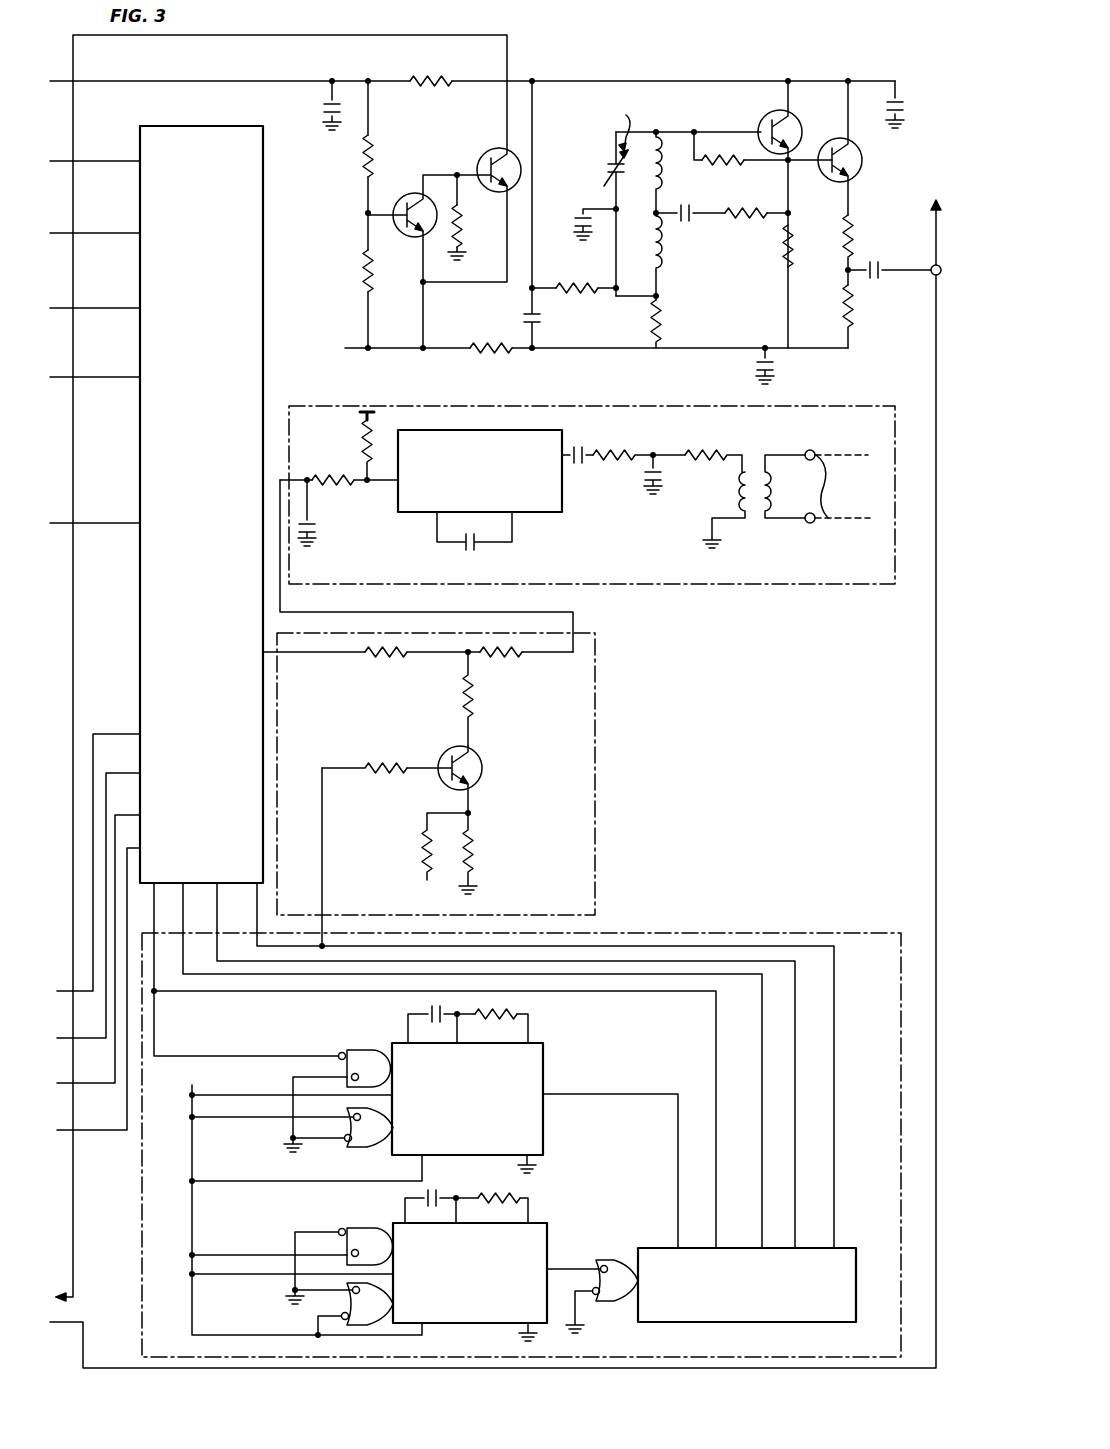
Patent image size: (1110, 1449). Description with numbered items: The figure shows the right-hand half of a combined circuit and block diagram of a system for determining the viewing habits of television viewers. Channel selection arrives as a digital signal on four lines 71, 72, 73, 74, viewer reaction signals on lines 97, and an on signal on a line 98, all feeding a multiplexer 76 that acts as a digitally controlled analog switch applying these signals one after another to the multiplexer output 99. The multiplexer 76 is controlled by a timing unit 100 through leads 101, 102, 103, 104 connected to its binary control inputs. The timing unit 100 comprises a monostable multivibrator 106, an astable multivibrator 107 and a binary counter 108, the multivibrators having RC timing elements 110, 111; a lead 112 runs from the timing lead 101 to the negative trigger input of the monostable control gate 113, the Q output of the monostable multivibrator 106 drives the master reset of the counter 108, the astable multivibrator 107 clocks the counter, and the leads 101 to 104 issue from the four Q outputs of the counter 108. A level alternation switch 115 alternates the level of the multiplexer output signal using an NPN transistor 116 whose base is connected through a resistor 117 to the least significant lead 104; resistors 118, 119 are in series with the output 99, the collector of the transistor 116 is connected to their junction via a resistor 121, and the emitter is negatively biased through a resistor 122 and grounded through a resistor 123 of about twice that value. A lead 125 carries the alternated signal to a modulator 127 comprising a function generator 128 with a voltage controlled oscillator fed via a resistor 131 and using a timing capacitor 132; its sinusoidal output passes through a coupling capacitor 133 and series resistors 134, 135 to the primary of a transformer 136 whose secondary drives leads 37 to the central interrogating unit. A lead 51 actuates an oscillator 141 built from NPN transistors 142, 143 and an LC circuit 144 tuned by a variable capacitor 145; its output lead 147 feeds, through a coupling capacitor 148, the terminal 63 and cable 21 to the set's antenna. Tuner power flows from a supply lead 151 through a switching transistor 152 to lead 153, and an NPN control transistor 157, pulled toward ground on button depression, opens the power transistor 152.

The cable 21 is at (930, 238).
The leads 37 is at (829, 486).
The lead 51 is at (62, 80).
The terminal 63 is at (940, 268).
The line 71 is at (120, 732).
The line 72 is at (126, 772).
The line 73 is at (133, 814).
The line 74 is at (136, 842).
The multiplexer 76 is at (263, 218).
The lines 97 is at (64, 160).
The line 98 is at (64, 522).
The multiplexer output 99 is at (296, 664).
The timing unit 100 is at (878, 1072).
The lead 101 is at (154, 883).
The lead 102 is at (196, 870).
The lead 103 is at (222, 882).
The lead 104 is at (257, 912).
The monostable multivibrator 106 is at (464, 1134).
The astable multivibrator 107 is at (470, 1314).
The binary counter 108 is at (744, 1300).
The RC timing element 110 is at (426, 1030).
The RC timing element 111 is at (424, 1214).
The lead 112 is at (285, 1054).
The monostable control gate 113 is at (353, 1050).
The level alternation switch 115 is at (540, 756).
The NPN transistor 116 is at (478, 780).
The resistor 117 is at (394, 776).
The resistor 118 is at (379, 658).
The resistor 119 is at (510, 658).
The resistor 121 is at (458, 702).
The resistor 122 is at (417, 852).
The resistor 123 is at (478, 843).
The lead 125 is at (576, 614).
The modulator 127 is at (634, 554).
The function generator 128 is at (496, 506).
The resistor 131 is at (331, 494).
The timing capacitor 132 is at (458, 554).
The coupling capacitor 133 is at (580, 464).
The resistor 134 is at (596, 452).
The resistor 135 is at (688, 452).
The transformer 136 is at (756, 470).
The oscillator 141 is at (726, 279).
The NPN transistor 142 is at (788, 110).
The NPN transistor 143 is at (857, 160).
The LC circuit 144 is at (607, 125).
The variable capacitor 145 is at (604, 182).
The output lead 147 is at (856, 296).
The coupling capacitor 148 is at (878, 280).
The supply lead 151 is at (345, 346).
The switching transistor 152 is at (490, 154).
The lead 153 is at (507, 64).
The NPN control transistor 157 is at (417, 200).